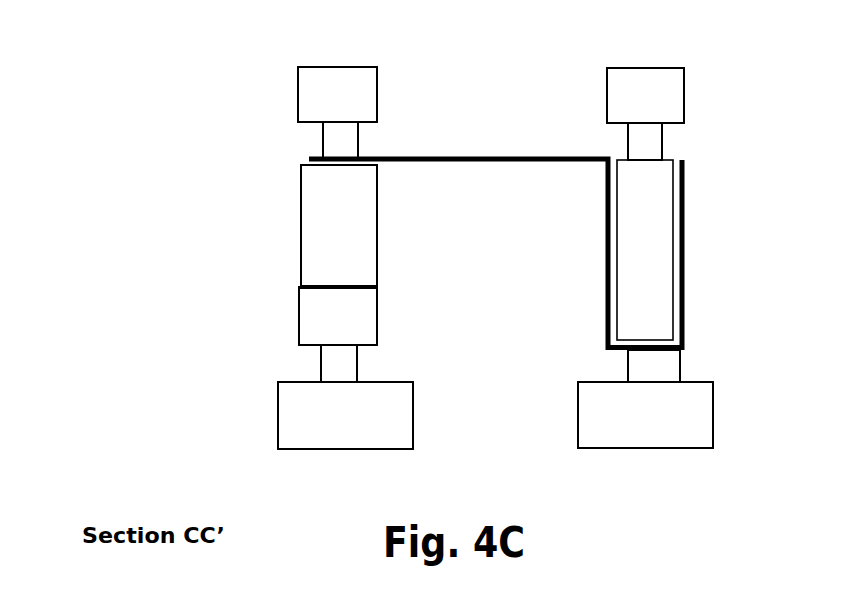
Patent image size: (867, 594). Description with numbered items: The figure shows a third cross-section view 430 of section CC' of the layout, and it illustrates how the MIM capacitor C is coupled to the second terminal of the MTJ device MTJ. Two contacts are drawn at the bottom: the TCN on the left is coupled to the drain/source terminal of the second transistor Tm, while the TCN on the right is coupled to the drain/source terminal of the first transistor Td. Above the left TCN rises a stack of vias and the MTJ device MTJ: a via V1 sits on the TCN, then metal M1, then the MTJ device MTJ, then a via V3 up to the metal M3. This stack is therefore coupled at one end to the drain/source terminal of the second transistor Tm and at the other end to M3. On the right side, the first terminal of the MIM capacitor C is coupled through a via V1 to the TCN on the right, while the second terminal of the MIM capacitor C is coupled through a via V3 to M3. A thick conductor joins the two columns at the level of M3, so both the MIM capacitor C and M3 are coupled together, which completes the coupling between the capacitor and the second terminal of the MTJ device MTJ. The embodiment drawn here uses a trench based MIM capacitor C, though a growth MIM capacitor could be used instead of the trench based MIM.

The third cross-section view 430 is at (68, 30).
The M3 metal layer M3 is at (491, 95).
The V3 via V3 is at (492, 141).
The MTJ device MTJ is at (339, 226).
The M1 metal layer M1 is at (338, 316).
The V1 via V1 is at (500, 363).
The element TCN is at (425, 360).
The second transistor Tm is at (295, 407).
The first transistor Td is at (694, 408).
The MIM capacitor C is at (638, 218).